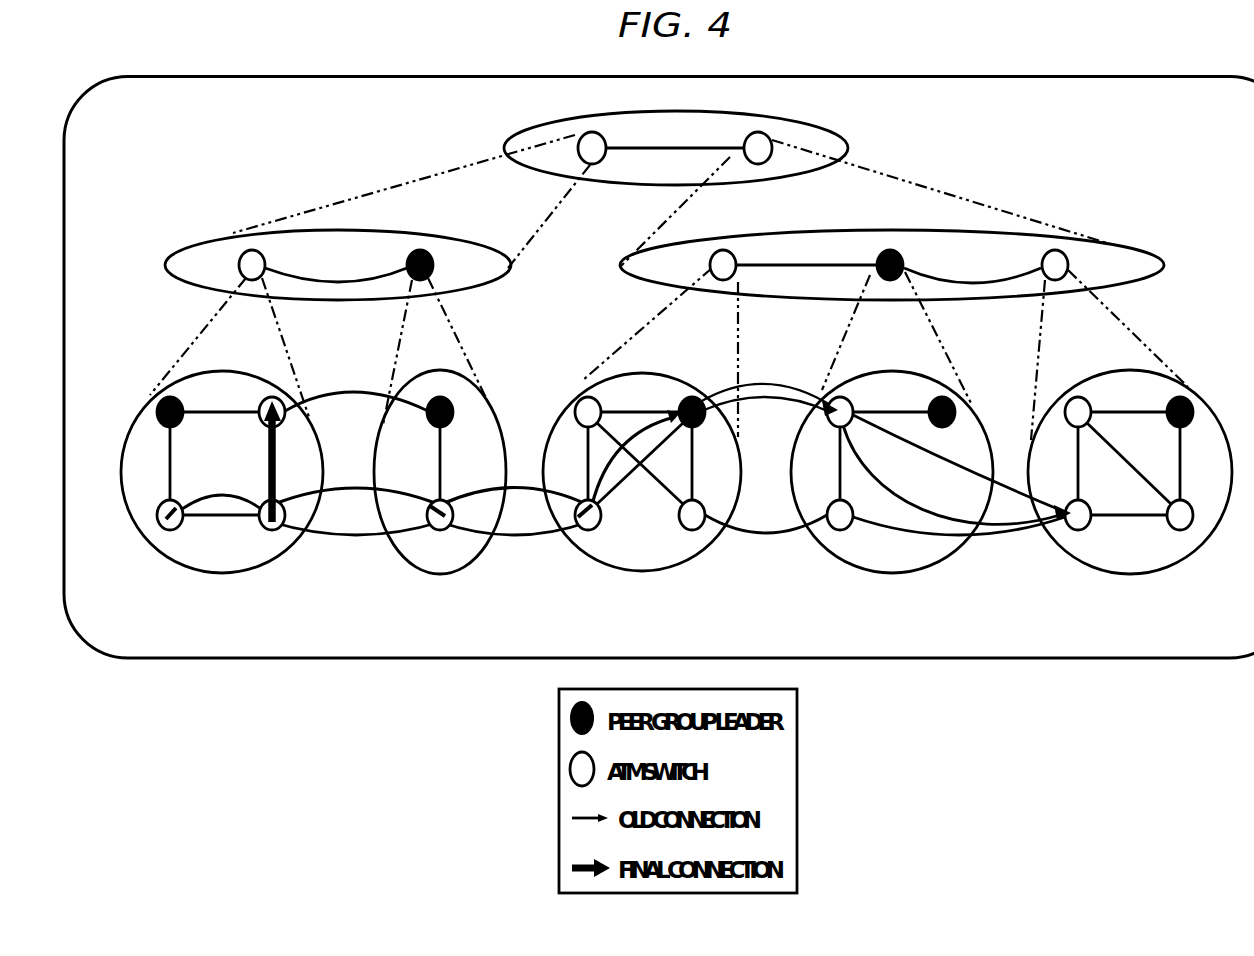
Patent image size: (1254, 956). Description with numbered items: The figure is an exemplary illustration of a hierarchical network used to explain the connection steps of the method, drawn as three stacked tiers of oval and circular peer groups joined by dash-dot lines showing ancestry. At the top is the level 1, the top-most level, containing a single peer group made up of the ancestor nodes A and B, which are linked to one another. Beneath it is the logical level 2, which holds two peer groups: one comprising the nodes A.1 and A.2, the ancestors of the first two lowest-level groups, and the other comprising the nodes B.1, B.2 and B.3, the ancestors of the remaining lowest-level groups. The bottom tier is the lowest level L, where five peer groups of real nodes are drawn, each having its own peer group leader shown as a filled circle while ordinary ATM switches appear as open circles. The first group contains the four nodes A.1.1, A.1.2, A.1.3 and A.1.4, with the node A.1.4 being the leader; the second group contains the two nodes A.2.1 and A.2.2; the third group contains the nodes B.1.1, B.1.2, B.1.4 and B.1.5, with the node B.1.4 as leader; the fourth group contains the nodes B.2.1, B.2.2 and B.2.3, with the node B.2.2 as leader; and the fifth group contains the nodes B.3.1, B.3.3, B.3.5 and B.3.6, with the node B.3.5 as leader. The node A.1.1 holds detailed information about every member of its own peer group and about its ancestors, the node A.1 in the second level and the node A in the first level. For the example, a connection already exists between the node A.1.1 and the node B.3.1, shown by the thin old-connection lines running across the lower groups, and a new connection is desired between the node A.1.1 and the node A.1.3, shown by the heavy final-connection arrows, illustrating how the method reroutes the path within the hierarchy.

The level l= 1 is at (582, 146).
The level l= 2 is at (640, 261).
The lowest level l= L is at (659, 472).
The node A is at (582, 150).
The node B is at (752, 156).
The node A.1 is at (268, 261).
The node A.2 is at (438, 261).
The node B.1 is at (739, 259).
The node B.2 is at (868, 259).
The node B.3 is at (1080, 265).
The node A.1.1 is at (141, 537).
The node A.1.2 is at (298, 537).
The node A.1.3 is at (308, 392).
The node A.1.4 is at (196, 384).
The node A.2.1 is at (484, 392).
The node A.2.2 is at (473, 545).
The node B.1.1 is at (586, 546).
The node B.1.2 is at (717, 538).
The node B.1.4 is at (740, 392).
The node B.1.5 is at (631, 385).
The node B.2.1 is at (824, 546).
The node B.2.2 is at (972, 390).
The node B.2.3 is at (867, 386).
The node B.3.1 is at (1054, 544).
The node B.3.3 is at (1200, 544).
The node B.3.5 is at (1206, 391).
The node B.3.6 is at (1071, 388).